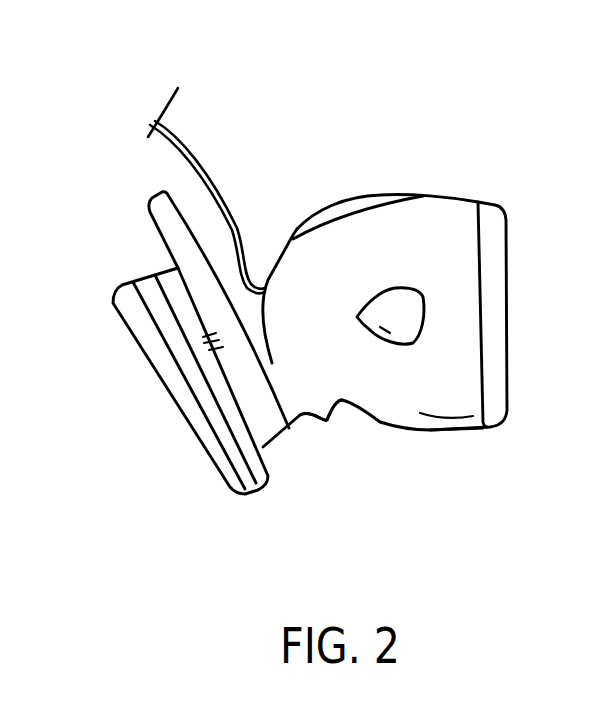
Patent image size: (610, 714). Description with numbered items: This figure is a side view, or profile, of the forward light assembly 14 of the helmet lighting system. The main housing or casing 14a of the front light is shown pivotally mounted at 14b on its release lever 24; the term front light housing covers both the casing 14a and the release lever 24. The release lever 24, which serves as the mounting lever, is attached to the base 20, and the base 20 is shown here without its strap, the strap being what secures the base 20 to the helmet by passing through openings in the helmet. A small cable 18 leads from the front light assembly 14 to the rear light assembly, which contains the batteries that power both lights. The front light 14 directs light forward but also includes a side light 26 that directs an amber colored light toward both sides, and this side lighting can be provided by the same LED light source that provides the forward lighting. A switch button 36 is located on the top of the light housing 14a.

The forward light assembly 14 is at (467, 122).
The main housing 14a is at (430, 430).
The pivot mounting 14b is at (322, 420).
The cable 18 is at (192, 150).
The base 20 is at (232, 493).
The release lever 24 is at (193, 252).
The side light 26 is at (398, 325).
The switch button 36 is at (369, 195).